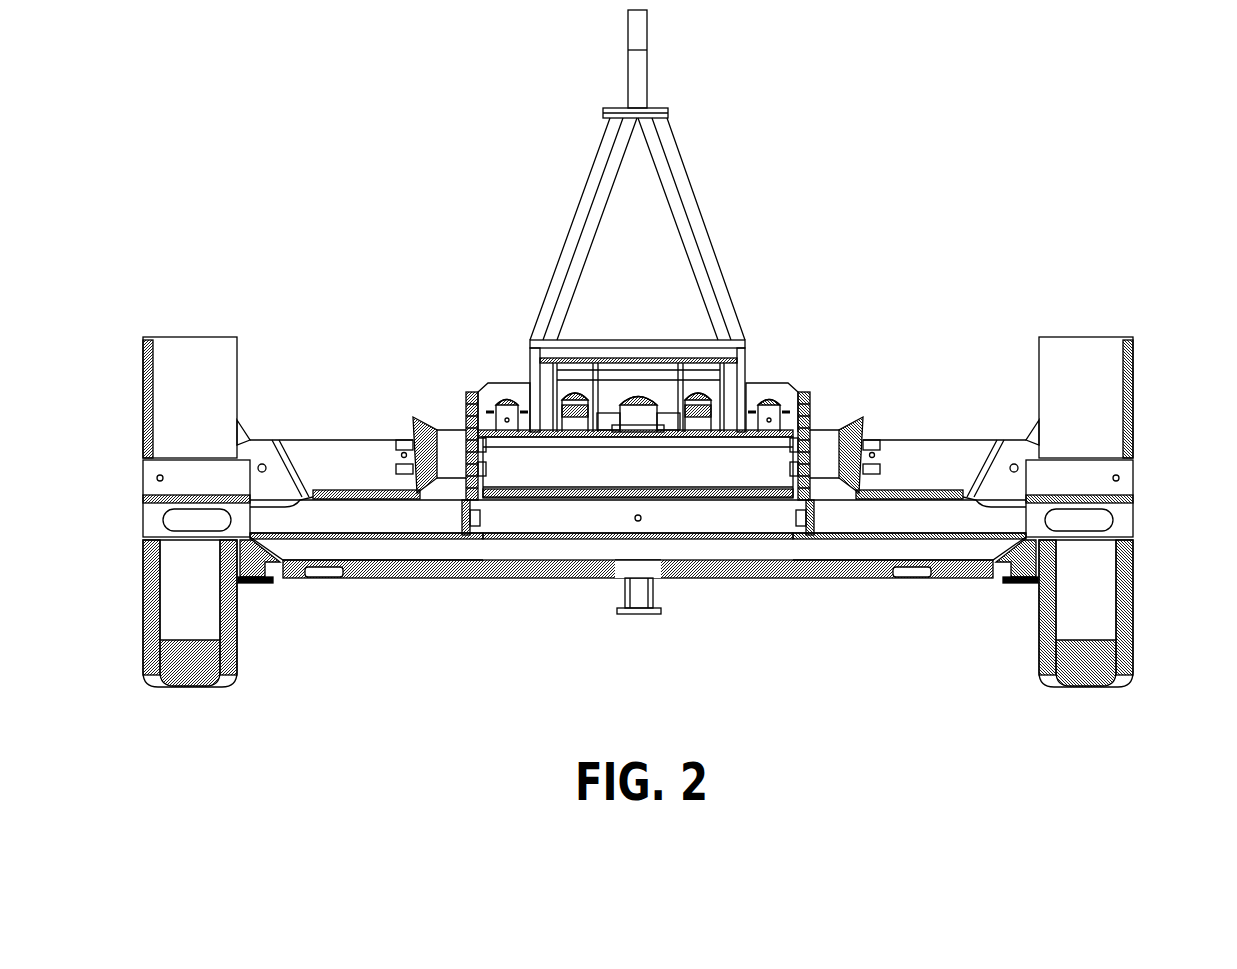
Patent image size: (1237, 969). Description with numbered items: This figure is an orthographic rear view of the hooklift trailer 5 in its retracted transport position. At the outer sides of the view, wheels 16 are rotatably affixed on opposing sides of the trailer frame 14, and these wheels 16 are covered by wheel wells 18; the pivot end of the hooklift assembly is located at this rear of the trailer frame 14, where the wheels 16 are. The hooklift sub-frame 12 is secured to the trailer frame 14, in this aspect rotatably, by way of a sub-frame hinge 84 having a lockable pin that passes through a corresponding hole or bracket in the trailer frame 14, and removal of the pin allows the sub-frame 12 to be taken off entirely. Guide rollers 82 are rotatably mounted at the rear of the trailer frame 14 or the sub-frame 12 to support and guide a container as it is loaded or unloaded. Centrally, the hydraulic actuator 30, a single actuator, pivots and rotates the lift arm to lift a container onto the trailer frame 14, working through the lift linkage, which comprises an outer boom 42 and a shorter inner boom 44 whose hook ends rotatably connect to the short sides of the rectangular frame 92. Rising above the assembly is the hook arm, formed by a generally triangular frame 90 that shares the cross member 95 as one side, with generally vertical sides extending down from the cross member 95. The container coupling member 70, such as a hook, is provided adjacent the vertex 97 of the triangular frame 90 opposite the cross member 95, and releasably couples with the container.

The hooklift trailer 5 is at (268, 183).
The hooklift sub-frame 12 is at (722, 525).
The trailer frame 14 is at (372, 550).
The wheels 16 is at (1087, 578).
The wheel wells 18 is at (1095, 360).
The hydraulic actuator 30 is at (635, 410).
The outer boom 42 is at (790, 410).
The inner boom 44 is at (700, 410).
The container coupling member 70 is at (639, 22).
The guide rollers 82 is at (415, 418).
The sub-frame hinge 84 is at (828, 525).
The triangular frame 90 is at (680, 190).
The rectangular frame 92 is at (735, 358).
The cross member 95 is at (663, 352).
The vertex 97 is at (642, 115).